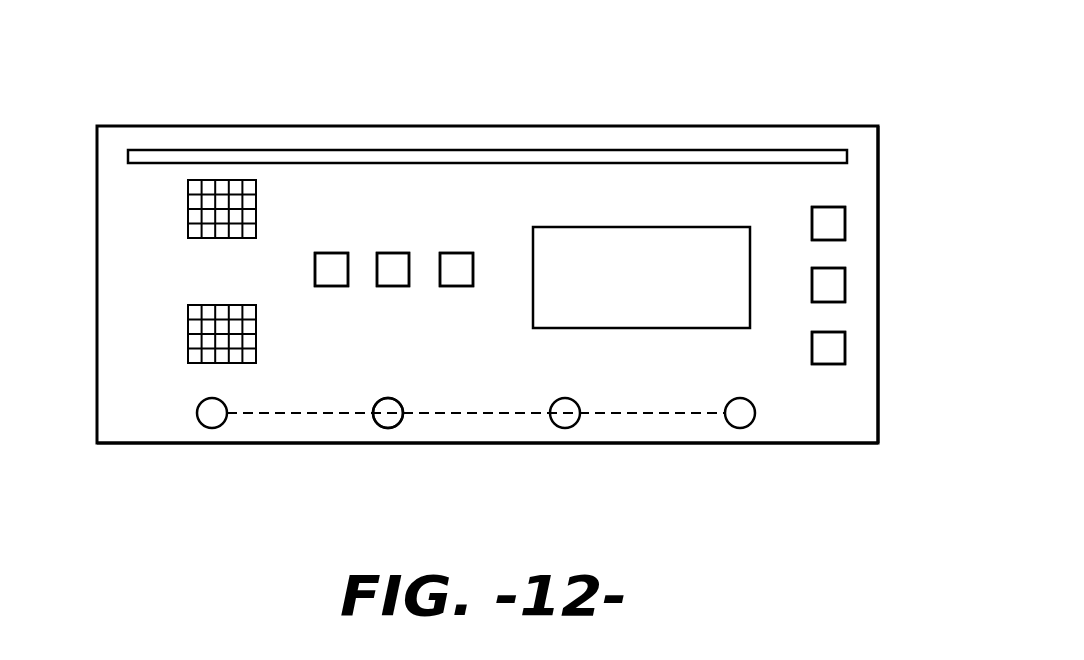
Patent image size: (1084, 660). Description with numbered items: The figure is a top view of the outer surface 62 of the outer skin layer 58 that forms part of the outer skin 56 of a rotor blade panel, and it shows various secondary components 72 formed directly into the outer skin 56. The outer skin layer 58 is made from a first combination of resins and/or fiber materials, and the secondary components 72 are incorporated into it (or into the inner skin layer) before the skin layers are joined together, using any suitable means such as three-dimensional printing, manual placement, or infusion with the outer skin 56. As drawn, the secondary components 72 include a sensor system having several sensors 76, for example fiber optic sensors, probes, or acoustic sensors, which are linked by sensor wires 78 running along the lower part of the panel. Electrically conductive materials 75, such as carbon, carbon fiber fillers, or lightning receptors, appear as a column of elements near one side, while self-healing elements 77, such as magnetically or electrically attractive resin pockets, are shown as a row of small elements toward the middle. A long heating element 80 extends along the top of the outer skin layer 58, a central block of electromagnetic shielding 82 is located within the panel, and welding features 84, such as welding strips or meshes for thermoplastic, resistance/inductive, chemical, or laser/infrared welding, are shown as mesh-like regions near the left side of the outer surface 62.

The outer skin 56 is at (782, 93).
The outer skin layer 58 is at (878, 176).
The outer surface 62 is at (812, 413).
The secondary components 72 is at (363, 150).
The electrically conductive materials 75 is at (845, 230).
The sensors 76 is at (388, 398).
The self-healing elements 77 is at (340, 253).
The sensor wires 78 is at (636, 413).
The heating elements 80 is at (495, 150).
The electromagnetic shielding 82 is at (657, 293).
The welding features 84 is at (190, 342).